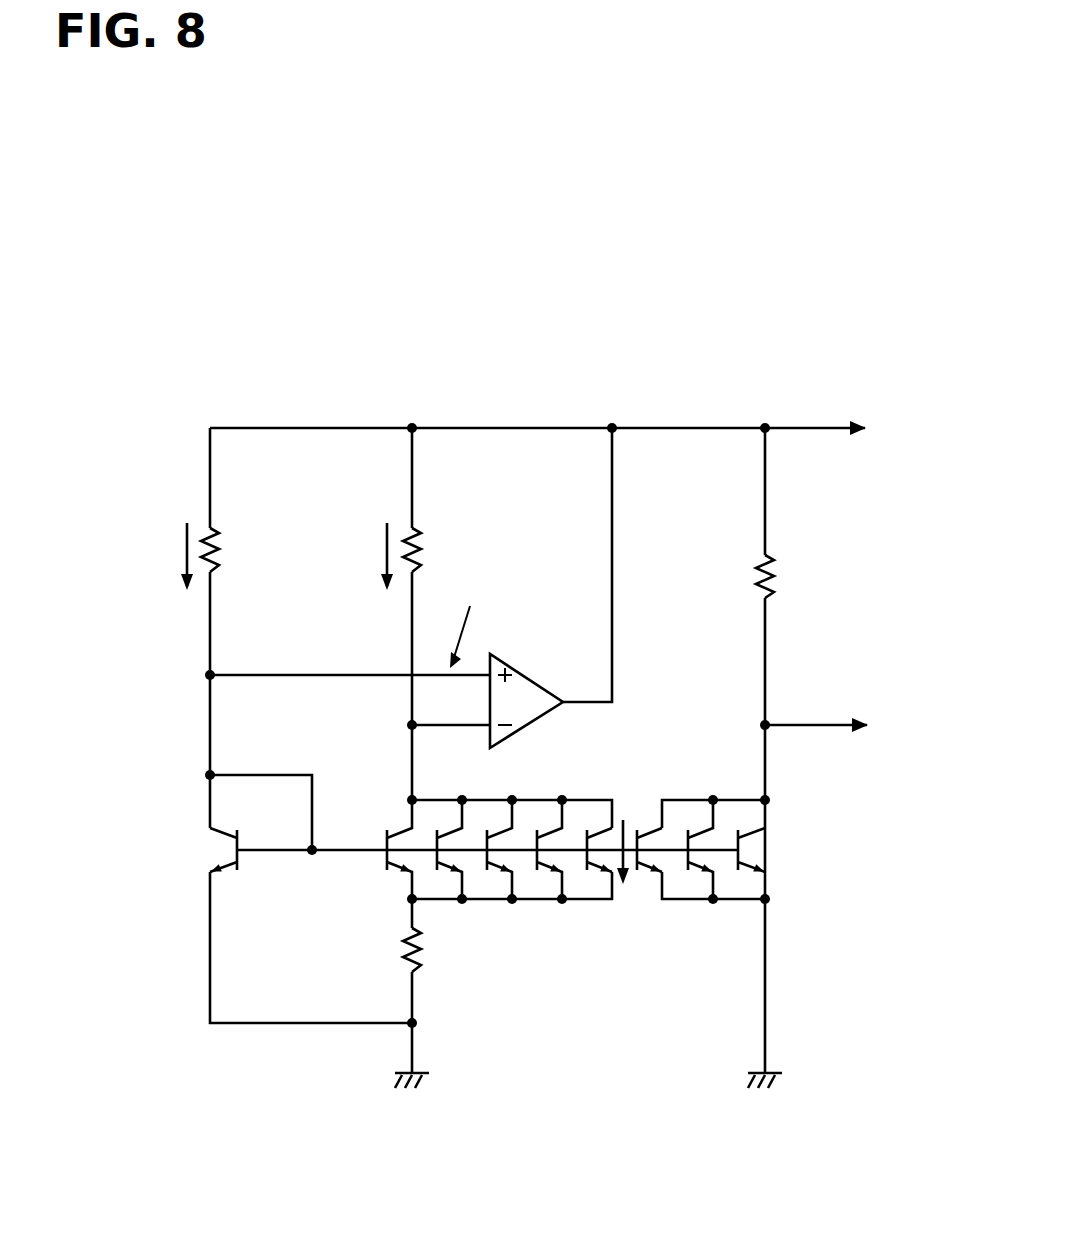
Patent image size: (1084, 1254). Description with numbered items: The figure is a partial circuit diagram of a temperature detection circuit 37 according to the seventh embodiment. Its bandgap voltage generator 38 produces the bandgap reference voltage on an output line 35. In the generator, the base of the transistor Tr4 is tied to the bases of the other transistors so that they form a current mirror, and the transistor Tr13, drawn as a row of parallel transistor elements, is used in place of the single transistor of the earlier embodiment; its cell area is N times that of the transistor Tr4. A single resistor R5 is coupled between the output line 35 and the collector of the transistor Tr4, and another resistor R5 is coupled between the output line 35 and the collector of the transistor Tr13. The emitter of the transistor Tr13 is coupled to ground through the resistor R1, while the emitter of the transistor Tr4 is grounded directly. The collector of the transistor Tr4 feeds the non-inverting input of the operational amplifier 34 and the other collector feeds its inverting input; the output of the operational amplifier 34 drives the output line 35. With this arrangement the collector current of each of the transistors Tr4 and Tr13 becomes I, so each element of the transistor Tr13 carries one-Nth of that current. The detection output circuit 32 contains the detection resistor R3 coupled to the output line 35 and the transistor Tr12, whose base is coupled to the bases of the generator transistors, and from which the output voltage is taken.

The detection output circuit 32 is at (778, 420).
The operational amplifier 34 is at (533, 678).
The output line 35 is at (692, 425).
The temperature detection circuit 37 is at (598, 377).
The VBG generator 38 is at (424, 420).
The resistor R1 is at (403, 955).
The detection resistor R3 is at (778, 581).
The resistor R5 is at (223, 553).
The transistor Tr4 is at (289, 821).
The transistor Tr12 is at (703, 850).
The transistor Tr13 is at (499, 850).